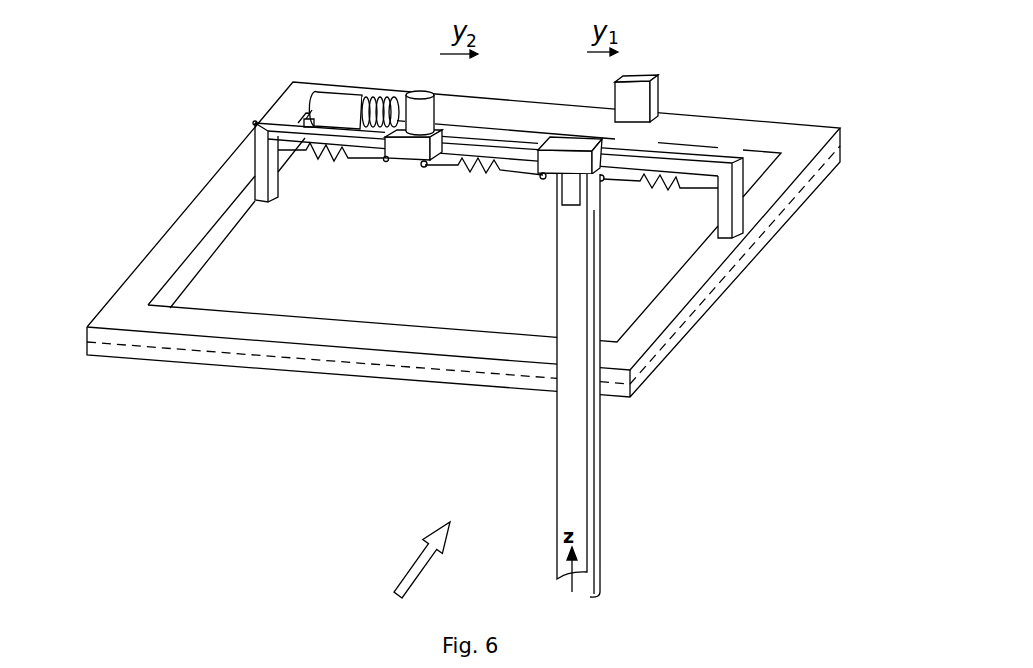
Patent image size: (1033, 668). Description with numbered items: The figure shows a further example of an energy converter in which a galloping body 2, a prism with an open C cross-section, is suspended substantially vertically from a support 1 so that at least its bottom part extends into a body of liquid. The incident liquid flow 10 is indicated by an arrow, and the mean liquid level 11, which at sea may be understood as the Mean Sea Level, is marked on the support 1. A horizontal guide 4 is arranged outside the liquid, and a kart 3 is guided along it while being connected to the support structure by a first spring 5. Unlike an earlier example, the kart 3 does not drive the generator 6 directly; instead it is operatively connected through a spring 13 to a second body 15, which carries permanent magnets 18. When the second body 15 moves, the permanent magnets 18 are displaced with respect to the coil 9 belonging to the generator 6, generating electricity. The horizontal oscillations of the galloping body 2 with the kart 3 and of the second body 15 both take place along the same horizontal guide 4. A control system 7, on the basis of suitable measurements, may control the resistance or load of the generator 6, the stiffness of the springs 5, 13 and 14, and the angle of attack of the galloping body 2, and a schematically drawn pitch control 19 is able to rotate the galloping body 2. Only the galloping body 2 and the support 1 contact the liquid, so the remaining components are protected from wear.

The support 1 is at (463, 239).
The galloping body 2 is at (572, 292).
The kart 3 is at (560, 165).
The horizontal guide 4 is at (692, 162).
The first spring 5 is at (660, 209).
The generator 6 is at (343, 104).
The control system 7 is at (638, 95).
The coil 9 is at (383, 103).
The incident liquid flow 10 is at (397, 560).
The mean liquid level 11 is at (687, 318).
The spring 13 is at (472, 185).
The spring 14 is at (322, 173).
The second body 15 is at (410, 149).
The permanent magnets 18 is at (425, 112).
The pitch control 19 is at (568, 202).